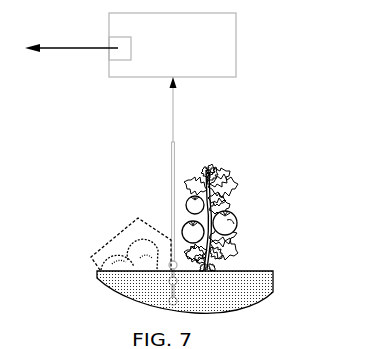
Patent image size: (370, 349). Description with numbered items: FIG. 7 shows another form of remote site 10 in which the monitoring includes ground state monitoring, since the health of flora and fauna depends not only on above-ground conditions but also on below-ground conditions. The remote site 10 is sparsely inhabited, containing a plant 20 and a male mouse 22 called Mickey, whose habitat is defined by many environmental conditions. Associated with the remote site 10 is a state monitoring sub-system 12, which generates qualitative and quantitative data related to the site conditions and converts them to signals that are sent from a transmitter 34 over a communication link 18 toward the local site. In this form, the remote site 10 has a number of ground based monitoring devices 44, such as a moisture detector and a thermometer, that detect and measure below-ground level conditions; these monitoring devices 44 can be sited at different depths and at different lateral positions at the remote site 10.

The remote site 10 is at (275, 207).
The state monitoring sub-system 12 is at (236, 45).
The communication link 18 is at (79, 46).
The plant 20 is at (233, 209).
The mouse 22 is at (123, 238).
The transmitter 34 is at (118, 48).
The ground based monitoring devices 44 is at (177, 282).